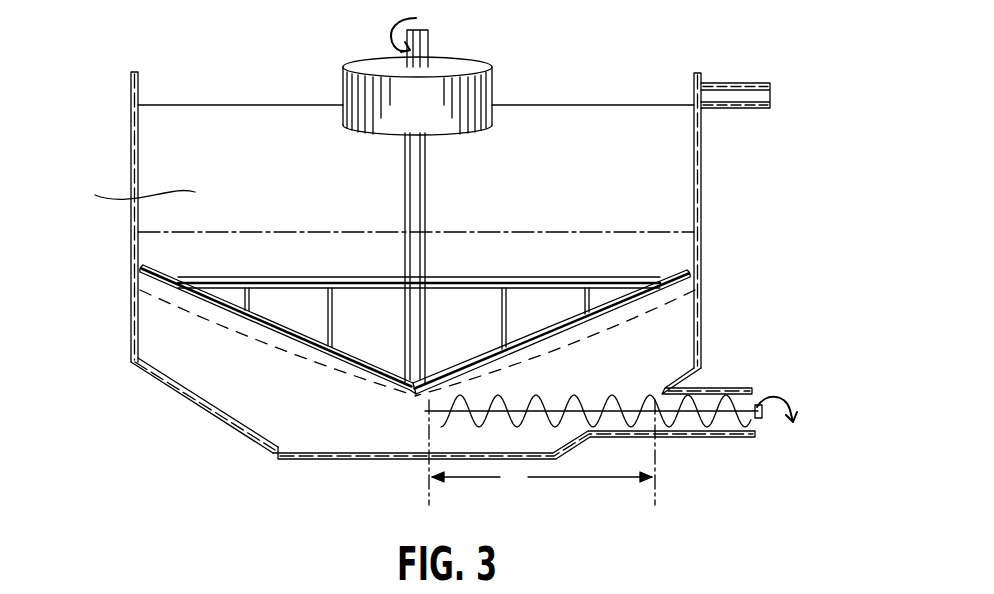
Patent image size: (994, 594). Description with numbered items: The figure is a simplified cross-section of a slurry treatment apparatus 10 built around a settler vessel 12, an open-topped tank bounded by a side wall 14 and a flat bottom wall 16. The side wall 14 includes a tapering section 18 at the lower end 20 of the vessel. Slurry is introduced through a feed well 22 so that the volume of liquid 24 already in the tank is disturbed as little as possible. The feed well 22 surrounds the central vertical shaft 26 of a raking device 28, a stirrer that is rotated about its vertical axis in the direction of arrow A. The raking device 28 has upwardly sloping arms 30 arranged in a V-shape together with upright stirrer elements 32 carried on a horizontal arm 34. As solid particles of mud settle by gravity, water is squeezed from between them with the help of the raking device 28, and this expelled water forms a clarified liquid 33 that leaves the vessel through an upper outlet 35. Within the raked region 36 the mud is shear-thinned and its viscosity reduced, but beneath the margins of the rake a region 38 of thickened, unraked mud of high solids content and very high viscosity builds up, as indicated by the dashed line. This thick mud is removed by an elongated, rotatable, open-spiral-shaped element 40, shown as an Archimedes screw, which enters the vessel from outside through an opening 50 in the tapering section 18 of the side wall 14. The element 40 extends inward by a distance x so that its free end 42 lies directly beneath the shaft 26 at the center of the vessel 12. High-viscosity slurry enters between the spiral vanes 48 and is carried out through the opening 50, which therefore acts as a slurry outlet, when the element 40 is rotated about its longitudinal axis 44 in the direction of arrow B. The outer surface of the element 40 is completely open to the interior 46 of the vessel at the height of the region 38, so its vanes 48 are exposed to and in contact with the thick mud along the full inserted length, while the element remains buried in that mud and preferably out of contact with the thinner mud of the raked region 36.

The apparatus 10 is at (688, 50).
The settler vessel 12 is at (702, 172).
The side wall 14 is at (131, 146).
The flat bottom wall 16 is at (292, 460).
The tapering section 18 is at (205, 415).
The lower end 20 is at (717, 352).
The feed well 22 is at (492, 92).
The volume of liquid 24 is at (180, 107).
The central vertical shaft 26 is at (405, 185).
The raking device 28 is at (512, 258).
The upwardly sloping arms 30 is at (305, 343).
The upright stirrer elements 32 is at (334, 311).
The clarified liquid 33 is at (126, 193).
The horizontal arm 34 is at (458, 277).
The upper outlet 35 is at (755, 110).
The raked region 36 is at (457, 318).
The unraked region 38 is at (332, 428).
The open-spiral-shaped element 40 is at (547, 427).
The free end 42 is at (425, 413).
The longitudinal axis 44 is at (757, 420).
The interior 46 is at (416, 188).
The spiral vanes 48 is at (688, 437).
The opening 50 is at (615, 422).
The arrow A is at (390, 22).
The arrow B is at (790, 400).